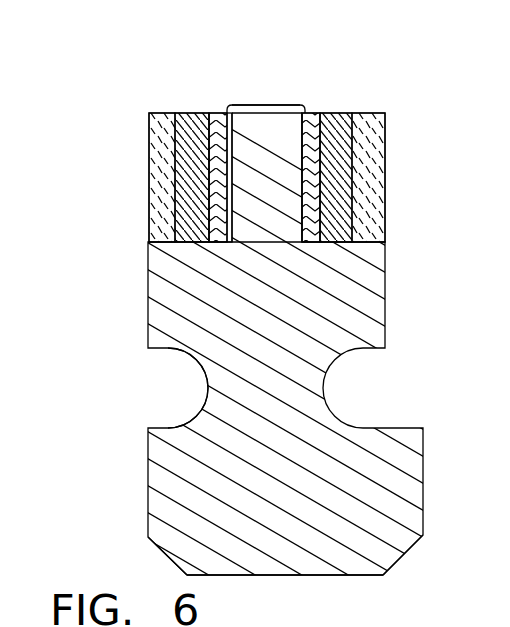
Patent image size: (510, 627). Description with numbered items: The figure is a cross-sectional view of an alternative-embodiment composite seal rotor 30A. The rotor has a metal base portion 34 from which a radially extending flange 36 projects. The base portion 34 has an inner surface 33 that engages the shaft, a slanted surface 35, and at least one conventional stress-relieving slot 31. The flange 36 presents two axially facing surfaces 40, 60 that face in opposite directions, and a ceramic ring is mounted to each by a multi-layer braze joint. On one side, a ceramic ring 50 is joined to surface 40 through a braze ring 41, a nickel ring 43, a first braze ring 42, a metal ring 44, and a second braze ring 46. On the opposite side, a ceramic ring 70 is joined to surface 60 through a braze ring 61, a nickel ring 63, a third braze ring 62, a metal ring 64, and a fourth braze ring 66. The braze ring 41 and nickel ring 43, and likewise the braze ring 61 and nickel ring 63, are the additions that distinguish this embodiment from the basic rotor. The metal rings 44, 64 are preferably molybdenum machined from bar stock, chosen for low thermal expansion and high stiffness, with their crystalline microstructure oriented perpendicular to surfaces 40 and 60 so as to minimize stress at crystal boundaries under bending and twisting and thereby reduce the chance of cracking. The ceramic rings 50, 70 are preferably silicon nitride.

The seal rotor 30A is at (148, 265).
The stress-relieving slot 31 is at (198, 362).
The inner surface 33 is at (232, 577).
The metal base portion 34 is at (288, 458).
The slanted surface 35 is at (163, 551).
The radially extending flange 36 is at (278, 218).
The axially facing surface 40 is at (229, 107).
The braze ring 41 is at (232, 157).
The first braze ring 42 is at (208, 113).
The nickel ring 43 is at (220, 113).
The metal ring 44 is at (198, 113).
The second braze ring 46 is at (178, 113).
The ceramic ring 50 is at (148, 147).
The axially facing surface 60 is at (306, 108).
The braze ring 61 is at (297, 134).
The third braze ring 62 is at (323, 113).
The nickel ring 63 is at (315, 113).
The metal ring 64 is at (335, 113).
The fourth braze ring 66 is at (353, 113).
The ceramic ring 70 is at (385, 137).